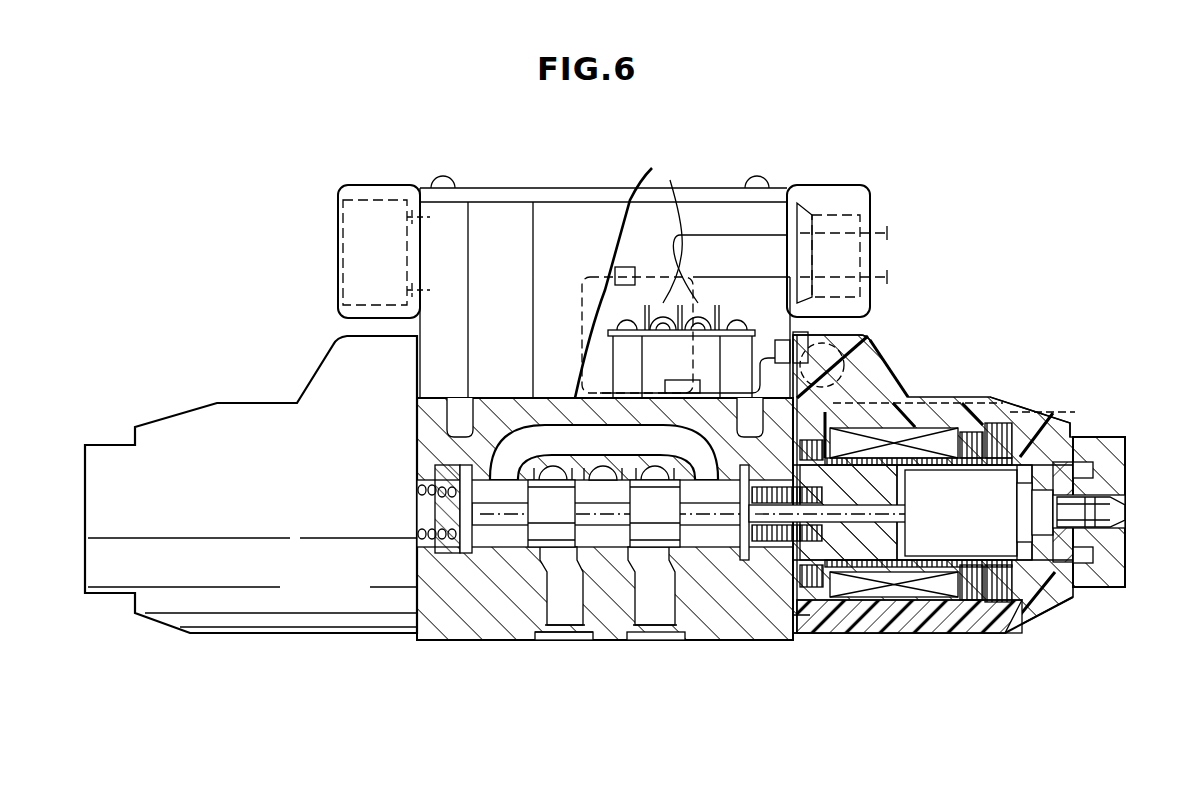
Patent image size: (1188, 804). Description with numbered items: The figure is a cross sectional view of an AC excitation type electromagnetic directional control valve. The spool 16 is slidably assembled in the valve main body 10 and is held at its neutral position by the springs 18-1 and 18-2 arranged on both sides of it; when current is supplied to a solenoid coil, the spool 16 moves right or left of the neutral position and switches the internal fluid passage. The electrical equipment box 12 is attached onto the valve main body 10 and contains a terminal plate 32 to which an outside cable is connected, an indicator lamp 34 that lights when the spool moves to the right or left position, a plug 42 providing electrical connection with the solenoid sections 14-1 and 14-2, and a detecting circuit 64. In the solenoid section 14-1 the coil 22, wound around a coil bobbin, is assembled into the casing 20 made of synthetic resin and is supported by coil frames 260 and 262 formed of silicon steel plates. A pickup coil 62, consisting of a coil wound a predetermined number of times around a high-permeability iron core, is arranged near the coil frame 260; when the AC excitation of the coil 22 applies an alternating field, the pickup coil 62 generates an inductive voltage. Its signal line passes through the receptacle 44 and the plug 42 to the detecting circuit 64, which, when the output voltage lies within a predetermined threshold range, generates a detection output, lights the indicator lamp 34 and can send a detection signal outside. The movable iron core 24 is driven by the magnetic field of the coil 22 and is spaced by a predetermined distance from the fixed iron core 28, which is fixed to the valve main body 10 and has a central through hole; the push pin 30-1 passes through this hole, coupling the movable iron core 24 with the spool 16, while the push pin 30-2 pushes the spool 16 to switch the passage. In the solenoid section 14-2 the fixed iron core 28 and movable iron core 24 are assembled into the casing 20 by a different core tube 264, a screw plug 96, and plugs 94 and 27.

The valve main body 10 is at (435, 645).
The electrical equipment box 12 is at (562, 186).
The solenoid section 14-1 is at (195, 438).
The solenoid section 14-2 is at (1057, 627).
The spool 16 is at (730, 628).
The spring 18-1 is at (802, 637).
The spring 18-2 is at (480, 630).
The casing 20 is at (1065, 603).
The coil 22 is at (925, 437).
The movable iron core 24 is at (992, 543).
The plug 27 is at (1103, 512).
The fixed iron core 28 is at (855, 550).
The push pin 30-1 is at (905, 580).
The push pin 30-2 is at (415, 516).
The terminal plate 32 is at (625, 269).
The indicator lamp 34 is at (614, 274).
The plug 42 is at (778, 340).
The receptacle 44 is at (866, 337).
The pickup coil 62 is at (1058, 415).
The detecting circuit 64 is at (680, 382).
The plug 94 is at (1127, 538).
The screw plug 96 is at (1126, 449).
The coil frame 260 is at (1010, 418).
The coil frame 262 is at (912, 425).
The core tube 264 is at (848, 585).